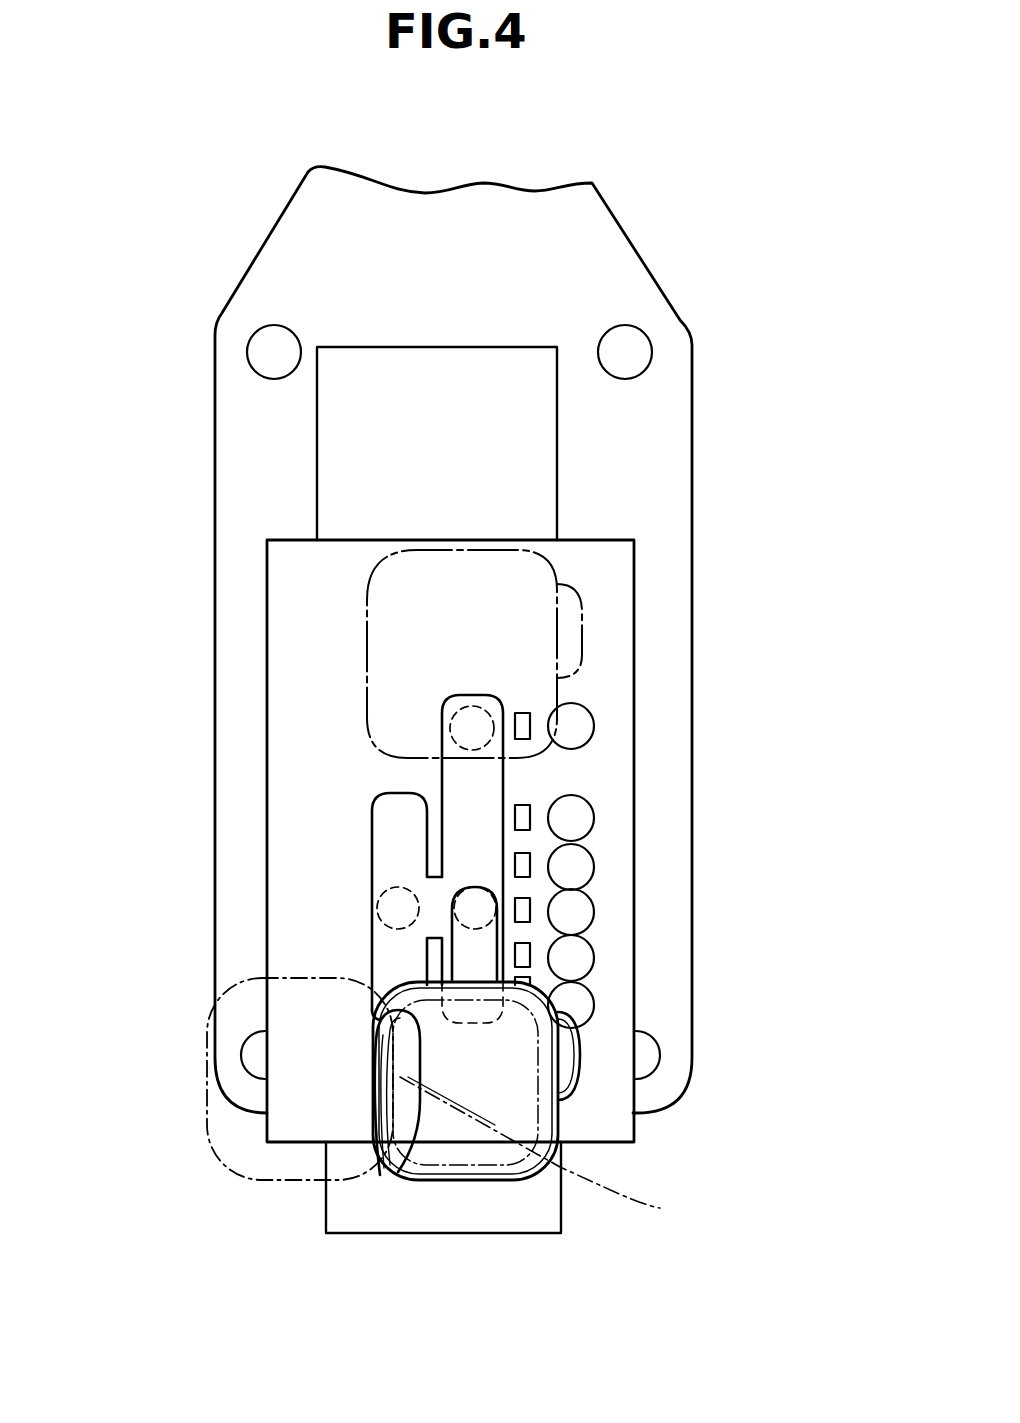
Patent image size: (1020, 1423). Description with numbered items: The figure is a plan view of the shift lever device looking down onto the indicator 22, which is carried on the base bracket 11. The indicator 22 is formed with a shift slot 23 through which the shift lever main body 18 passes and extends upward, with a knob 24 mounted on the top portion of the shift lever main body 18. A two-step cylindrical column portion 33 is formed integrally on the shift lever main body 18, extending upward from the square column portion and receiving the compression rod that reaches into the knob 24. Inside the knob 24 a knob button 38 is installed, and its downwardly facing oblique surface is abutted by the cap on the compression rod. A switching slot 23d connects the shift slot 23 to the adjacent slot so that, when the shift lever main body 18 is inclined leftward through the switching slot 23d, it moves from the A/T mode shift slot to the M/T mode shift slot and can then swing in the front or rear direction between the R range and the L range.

The base bracket 11 is at (700, 468).
The shift lever main body 18 is at (434, 733).
The indicator 22 is at (620, 672).
The shift slot 23 is at (503, 782).
The switching slot 23d is at (430, 878).
The knob 24 is at (368, 612).
The cylindrical column portion 33 is at (452, 715).
The knob button 38 is at (582, 634).